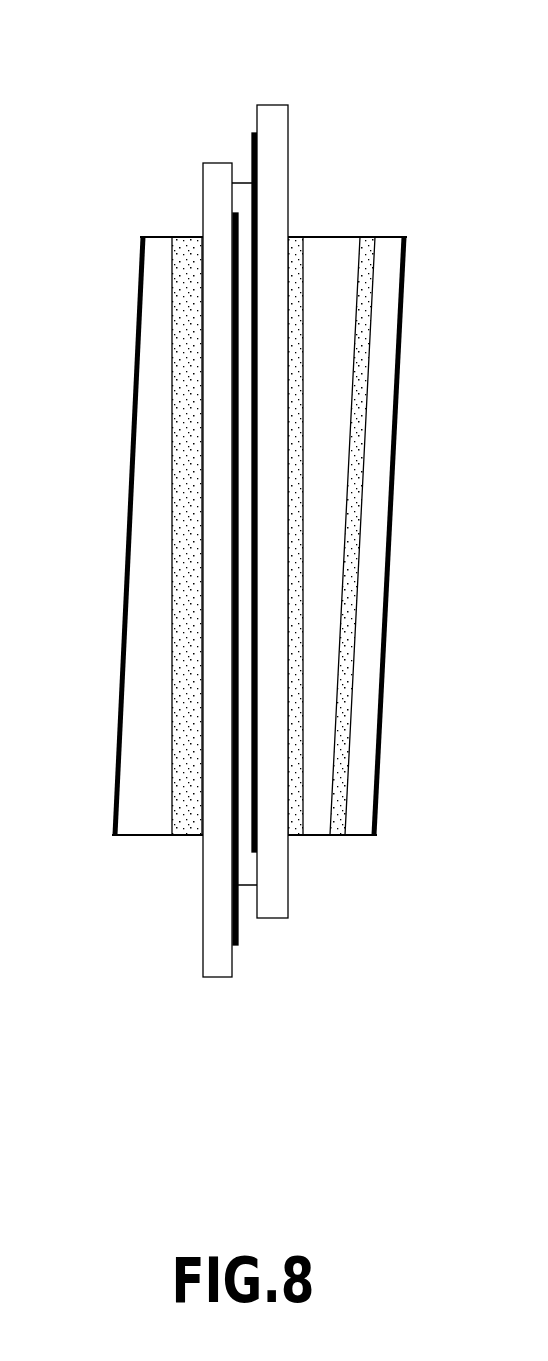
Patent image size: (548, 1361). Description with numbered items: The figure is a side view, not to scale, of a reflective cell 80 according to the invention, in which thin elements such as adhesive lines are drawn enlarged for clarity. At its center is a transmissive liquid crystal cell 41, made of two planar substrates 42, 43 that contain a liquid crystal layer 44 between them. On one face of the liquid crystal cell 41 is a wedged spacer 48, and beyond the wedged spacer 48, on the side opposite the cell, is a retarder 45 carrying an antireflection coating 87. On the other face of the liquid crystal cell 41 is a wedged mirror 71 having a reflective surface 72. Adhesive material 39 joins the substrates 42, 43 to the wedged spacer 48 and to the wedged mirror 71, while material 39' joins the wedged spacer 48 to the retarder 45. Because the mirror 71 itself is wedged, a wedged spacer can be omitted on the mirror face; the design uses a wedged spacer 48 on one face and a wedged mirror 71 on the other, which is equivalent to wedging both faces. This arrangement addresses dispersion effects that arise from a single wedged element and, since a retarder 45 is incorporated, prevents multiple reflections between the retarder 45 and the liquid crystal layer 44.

The adhesive material 39 is at (240, 561).
The material 39' is at (390, 538).
The transmissive liquid crystal cell 41 is at (292, 73).
The planar substrate 42 is at (213, 164).
The planar substrate 43 is at (307, 489).
The liquid crystal layer 44 is at (245, 203).
The retarder 45 is at (385, 237).
The wedged spacer 48 is at (320, 237).
The wedged mirror 71 is at (148, 415).
The reflective surface 72 is at (128, 471).
The reflective cell 80 is at (383, 1013).
The antireflection coating 87 is at (402, 388).